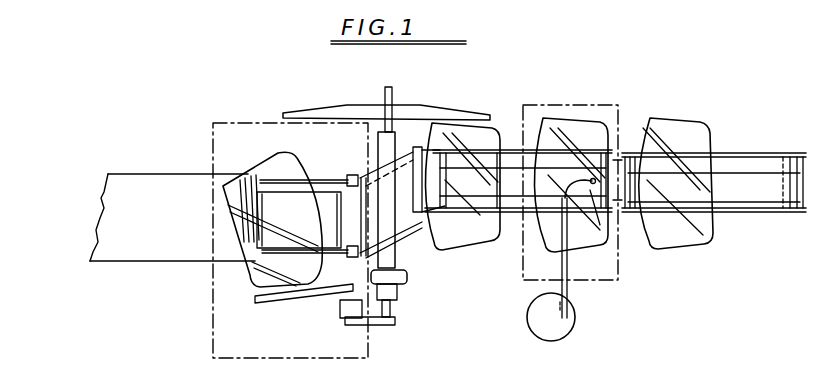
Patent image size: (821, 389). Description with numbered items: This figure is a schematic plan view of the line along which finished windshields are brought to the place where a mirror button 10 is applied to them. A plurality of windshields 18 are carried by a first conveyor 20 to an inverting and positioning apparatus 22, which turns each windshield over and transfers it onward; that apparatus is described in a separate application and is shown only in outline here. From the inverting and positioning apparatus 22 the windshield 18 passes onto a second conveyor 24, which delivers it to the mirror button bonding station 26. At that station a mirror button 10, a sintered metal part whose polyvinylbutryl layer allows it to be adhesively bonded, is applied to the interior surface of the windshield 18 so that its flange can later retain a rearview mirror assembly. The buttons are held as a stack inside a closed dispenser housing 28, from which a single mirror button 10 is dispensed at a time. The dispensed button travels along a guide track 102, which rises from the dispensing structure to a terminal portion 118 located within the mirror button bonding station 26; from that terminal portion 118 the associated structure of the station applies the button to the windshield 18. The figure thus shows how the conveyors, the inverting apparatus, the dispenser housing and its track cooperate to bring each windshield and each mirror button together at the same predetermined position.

The mirror button 10 is at (710, 183).
The windshield 18 is at (277, 180).
The first conveyor 20 is at (142, 250).
The inverting and positioning apparatus 22 is at (443, 260).
The second conveyor 24 is at (508, 165).
The mirror button bonding station 26 is at (588, 95).
The closed dispenser housing 28 is at (578, 323).
The guide track 102 is at (568, 291).
The terminal portion 118 is at (588, 228).